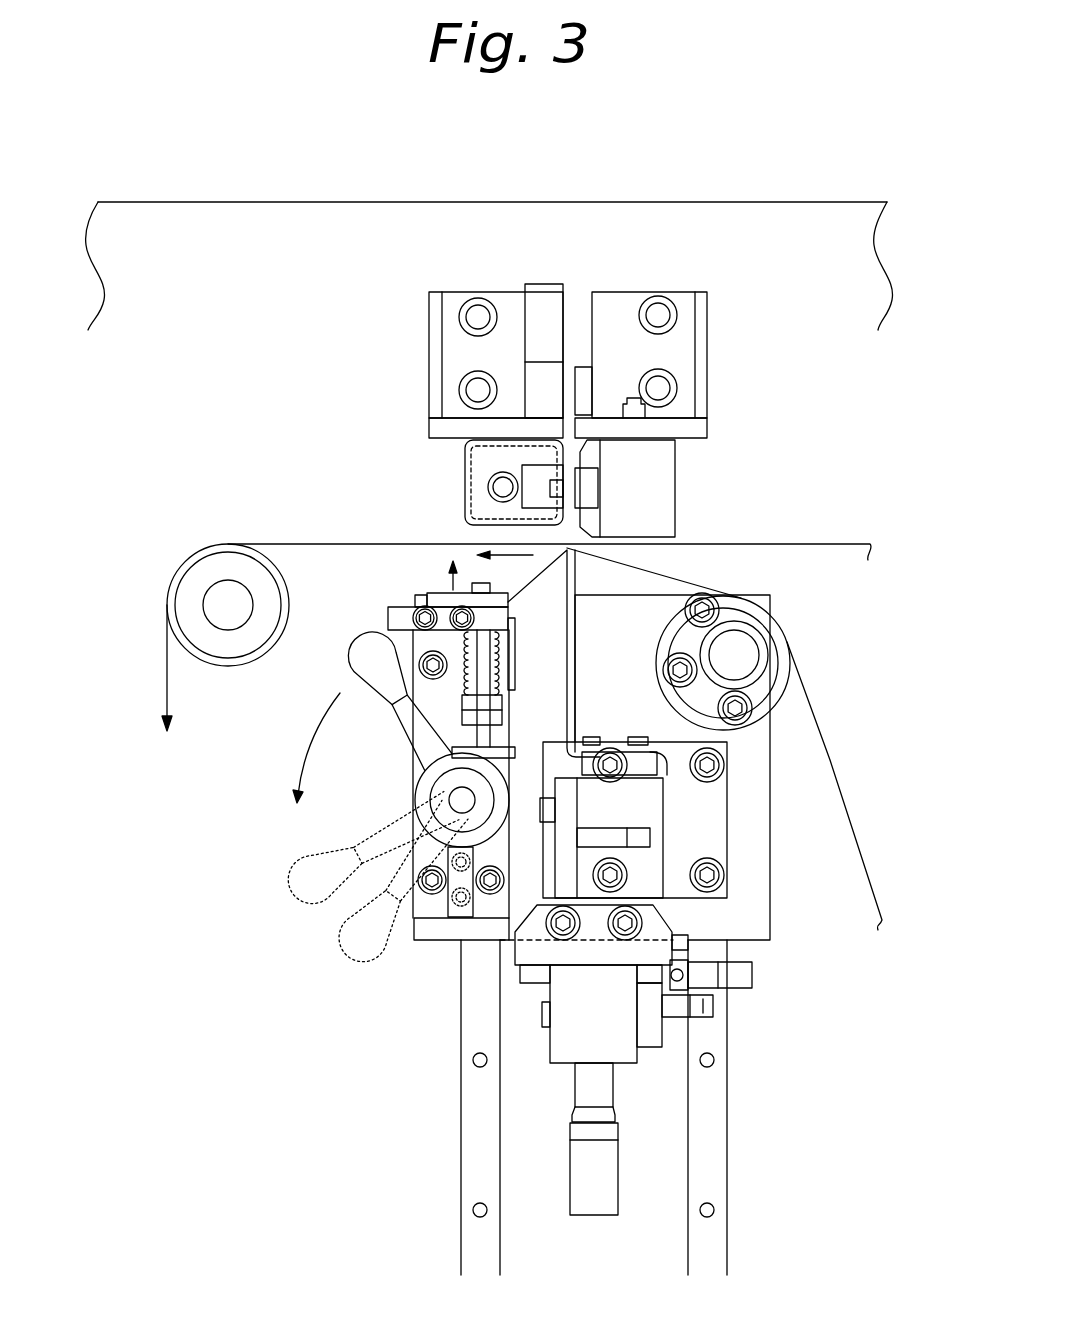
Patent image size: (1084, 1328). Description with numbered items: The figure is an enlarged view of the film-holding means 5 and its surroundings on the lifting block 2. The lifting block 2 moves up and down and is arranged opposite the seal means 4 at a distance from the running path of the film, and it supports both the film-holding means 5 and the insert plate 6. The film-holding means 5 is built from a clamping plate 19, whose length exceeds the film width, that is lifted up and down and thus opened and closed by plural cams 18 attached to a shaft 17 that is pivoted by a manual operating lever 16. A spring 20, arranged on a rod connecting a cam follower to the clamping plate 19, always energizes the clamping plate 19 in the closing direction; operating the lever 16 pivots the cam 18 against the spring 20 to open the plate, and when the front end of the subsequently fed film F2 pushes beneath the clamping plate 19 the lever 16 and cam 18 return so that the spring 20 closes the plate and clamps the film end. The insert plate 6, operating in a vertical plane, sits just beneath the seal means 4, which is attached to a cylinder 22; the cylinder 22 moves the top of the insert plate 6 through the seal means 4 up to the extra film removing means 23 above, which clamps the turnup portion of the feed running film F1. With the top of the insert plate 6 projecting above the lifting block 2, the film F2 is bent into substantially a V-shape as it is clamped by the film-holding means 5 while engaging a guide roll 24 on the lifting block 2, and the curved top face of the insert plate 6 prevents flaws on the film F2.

The lifting block 2 is at (782, 769).
The seal means 4 is at (688, 484).
The film-holding means 5 is at (403, 589).
The insert plate 6 is at (576, 678).
The manual operating lever 16 is at (398, 721).
The shaft 17 is at (444, 798).
The cam 18 is at (503, 783).
The clamping plate 19 is at (438, 592).
The spring 20 is at (497, 637).
The cylinder 22 is at (638, 810).
The extra film removing means 23 is at (575, 340).
The guide roll 24 is at (763, 628).
The feed running film F1 is at (735, 543).
The subsequently feeding and running film F2 is at (683, 578).